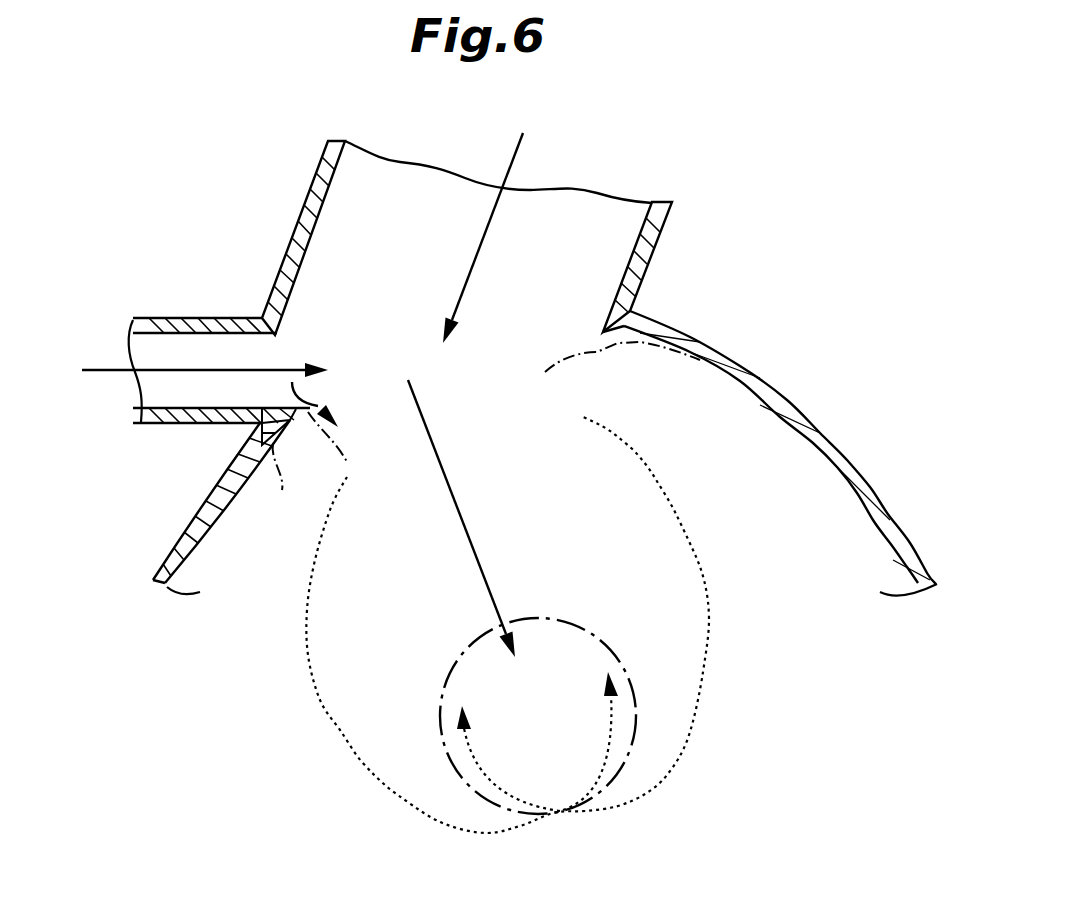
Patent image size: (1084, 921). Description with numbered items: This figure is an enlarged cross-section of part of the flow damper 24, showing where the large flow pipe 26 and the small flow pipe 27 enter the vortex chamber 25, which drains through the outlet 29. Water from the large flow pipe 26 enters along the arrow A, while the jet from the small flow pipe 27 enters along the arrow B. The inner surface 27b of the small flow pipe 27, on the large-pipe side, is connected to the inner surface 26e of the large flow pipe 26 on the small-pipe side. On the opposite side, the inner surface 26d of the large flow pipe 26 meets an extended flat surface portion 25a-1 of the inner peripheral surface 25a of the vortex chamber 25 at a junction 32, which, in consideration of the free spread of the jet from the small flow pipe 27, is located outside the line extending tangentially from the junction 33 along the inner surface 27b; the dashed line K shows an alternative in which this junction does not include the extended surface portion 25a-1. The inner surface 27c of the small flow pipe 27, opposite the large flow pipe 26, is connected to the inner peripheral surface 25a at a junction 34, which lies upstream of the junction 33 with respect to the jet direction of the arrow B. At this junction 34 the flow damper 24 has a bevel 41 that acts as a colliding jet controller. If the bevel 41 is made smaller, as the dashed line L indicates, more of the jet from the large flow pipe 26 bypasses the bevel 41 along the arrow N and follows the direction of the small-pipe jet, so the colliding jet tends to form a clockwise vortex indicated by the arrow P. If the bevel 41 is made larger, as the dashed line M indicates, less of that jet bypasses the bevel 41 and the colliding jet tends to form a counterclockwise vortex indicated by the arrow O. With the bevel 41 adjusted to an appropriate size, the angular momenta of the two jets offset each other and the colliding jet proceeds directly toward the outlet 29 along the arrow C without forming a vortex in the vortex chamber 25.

The flow damper 24 is at (721, 166).
The vortex chamber 25 is at (152, 573).
The inner peripheral surface 25a is at (213, 521).
The extended surface portion 25a-1 is at (665, 342).
The large flow pipe 26 is at (673, 217).
The inner surface 26d is at (640, 264).
The inner surface 26e is at (304, 236).
The small flow pipe 27 is at (143, 320).
The inner surface 27b is at (186, 335).
The inner surface 27c is at (157, 414).
The outlet 29 is at (606, 792).
The junction 32 is at (610, 316).
The junction 33 is at (267, 333).
The junction 34 is at (267, 410).
The bevel 41 is at (291, 423).
The arrow A is at (510, 158).
The arrow B is at (97, 368).
The arrow C is at (468, 505).
The dashed line K is at (615, 372).
The dashed line L is at (336, 444).
The dashed line M is at (278, 485).
The arrow N is at (337, 405).
The arrow O is at (305, 655).
The arrow P is at (700, 543).